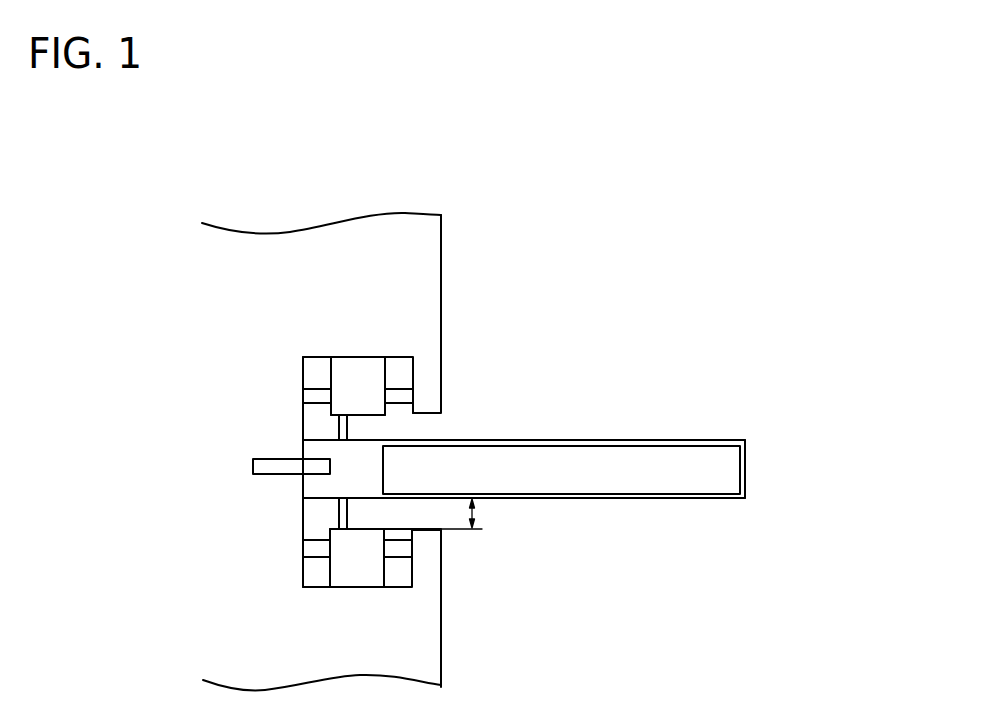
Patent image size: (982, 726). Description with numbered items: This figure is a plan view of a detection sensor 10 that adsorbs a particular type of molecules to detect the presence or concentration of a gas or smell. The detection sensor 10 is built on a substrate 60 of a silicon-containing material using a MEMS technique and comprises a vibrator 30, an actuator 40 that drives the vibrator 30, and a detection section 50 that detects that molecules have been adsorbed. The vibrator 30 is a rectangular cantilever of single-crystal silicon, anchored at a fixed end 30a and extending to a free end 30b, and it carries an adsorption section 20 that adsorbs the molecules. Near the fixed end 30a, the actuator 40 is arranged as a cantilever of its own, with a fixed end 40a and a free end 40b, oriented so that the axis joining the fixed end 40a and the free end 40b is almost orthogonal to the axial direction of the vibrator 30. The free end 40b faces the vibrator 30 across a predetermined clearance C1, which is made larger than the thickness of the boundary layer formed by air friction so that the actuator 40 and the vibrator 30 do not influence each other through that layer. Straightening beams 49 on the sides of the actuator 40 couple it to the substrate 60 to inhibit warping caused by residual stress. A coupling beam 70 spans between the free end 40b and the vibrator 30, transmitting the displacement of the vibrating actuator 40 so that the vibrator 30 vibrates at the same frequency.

The detection sensor 10 is at (650, 395).
The adsorption section 20 is at (705, 447).
The vibrator 30 is at (647, 499).
The fixed end 30a is at (303, 500).
The free end 30b is at (745, 473).
The actuator 40 is at (385, 372).
The fixed end 40a is at (370, 358).
The free end 40b is at (363, 416).
The straightening beam 49 is at (317, 388).
The detection section 50 is at (253, 459).
The substrate 60 is at (441, 325).
The coupling beam 70 is at (333, 427).
The clearance C1 is at (480, 516).